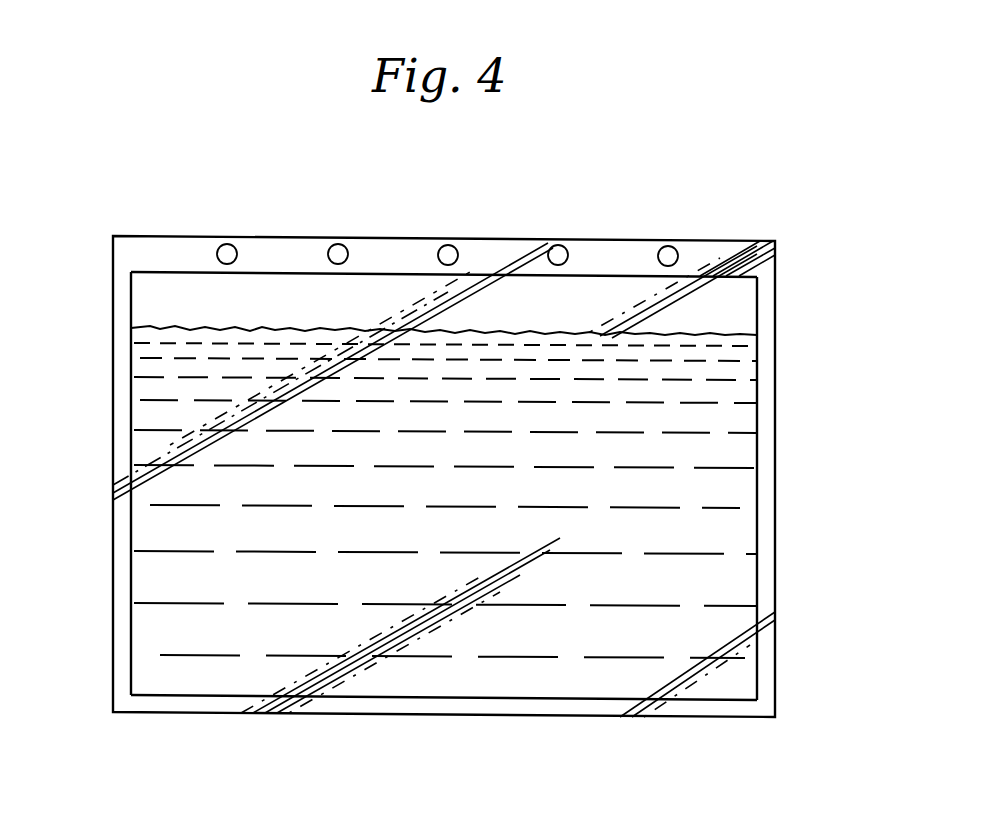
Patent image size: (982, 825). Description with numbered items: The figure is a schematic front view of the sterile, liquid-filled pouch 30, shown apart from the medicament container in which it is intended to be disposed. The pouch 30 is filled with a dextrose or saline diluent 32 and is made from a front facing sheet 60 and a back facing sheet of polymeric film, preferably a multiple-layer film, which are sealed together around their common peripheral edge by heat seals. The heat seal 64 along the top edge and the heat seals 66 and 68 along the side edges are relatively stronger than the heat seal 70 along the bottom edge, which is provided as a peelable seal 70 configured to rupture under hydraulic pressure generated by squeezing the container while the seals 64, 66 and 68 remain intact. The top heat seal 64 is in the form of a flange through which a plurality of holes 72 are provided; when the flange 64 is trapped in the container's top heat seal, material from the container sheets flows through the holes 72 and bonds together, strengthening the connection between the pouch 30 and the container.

The pouch 30 is at (116, 222).
The diluent 32 is at (398, 595).
The front facing sheet 60 is at (715, 447).
The top heat seal 64 is at (393, 249).
The side heat seal 66 is at (118, 421).
The side heat seal 68 is at (768, 372).
The peelable seal 70 is at (530, 714).
The holes 72 is at (337, 244).